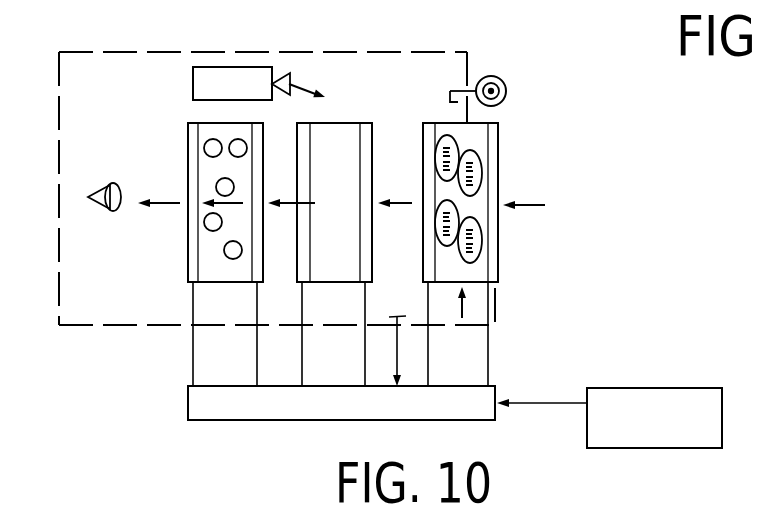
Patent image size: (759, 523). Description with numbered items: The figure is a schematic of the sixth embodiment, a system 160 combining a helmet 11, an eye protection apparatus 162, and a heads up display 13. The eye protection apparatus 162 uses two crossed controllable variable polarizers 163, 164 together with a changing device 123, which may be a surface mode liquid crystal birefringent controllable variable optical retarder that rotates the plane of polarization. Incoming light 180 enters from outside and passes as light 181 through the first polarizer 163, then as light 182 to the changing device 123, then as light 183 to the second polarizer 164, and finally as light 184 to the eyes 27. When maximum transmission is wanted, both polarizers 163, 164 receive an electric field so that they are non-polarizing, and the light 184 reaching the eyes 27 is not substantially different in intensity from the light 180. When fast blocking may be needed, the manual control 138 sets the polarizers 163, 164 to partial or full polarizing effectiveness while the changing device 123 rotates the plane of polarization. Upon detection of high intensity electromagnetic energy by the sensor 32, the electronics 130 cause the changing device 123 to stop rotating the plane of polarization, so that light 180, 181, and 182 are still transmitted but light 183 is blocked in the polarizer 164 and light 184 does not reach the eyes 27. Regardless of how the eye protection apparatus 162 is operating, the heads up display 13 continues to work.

The system 160 is at (52, 46).
The helmet 11 is at (60, 73).
The heads up display 13 is at (193, 82).
The eyes 27 is at (100, 188).
The light 183 is at (208, 202).
The light 184 is at (176, 207).
The controllable variable polarizer 164 is at (244, 117).
The light 182 is at (288, 203).
The light 181 is at (403, 202).
The changing device 123 is at (386, 233).
The controllable variable polarizer 163 is at (424, 114).
The sensor 32 is at (498, 80).
The eye protection apparatus 162 is at (502, 111).
The light 180 is at (565, 179).
The electronics 130 is at (188, 401).
The manual control 138 is at (617, 387).